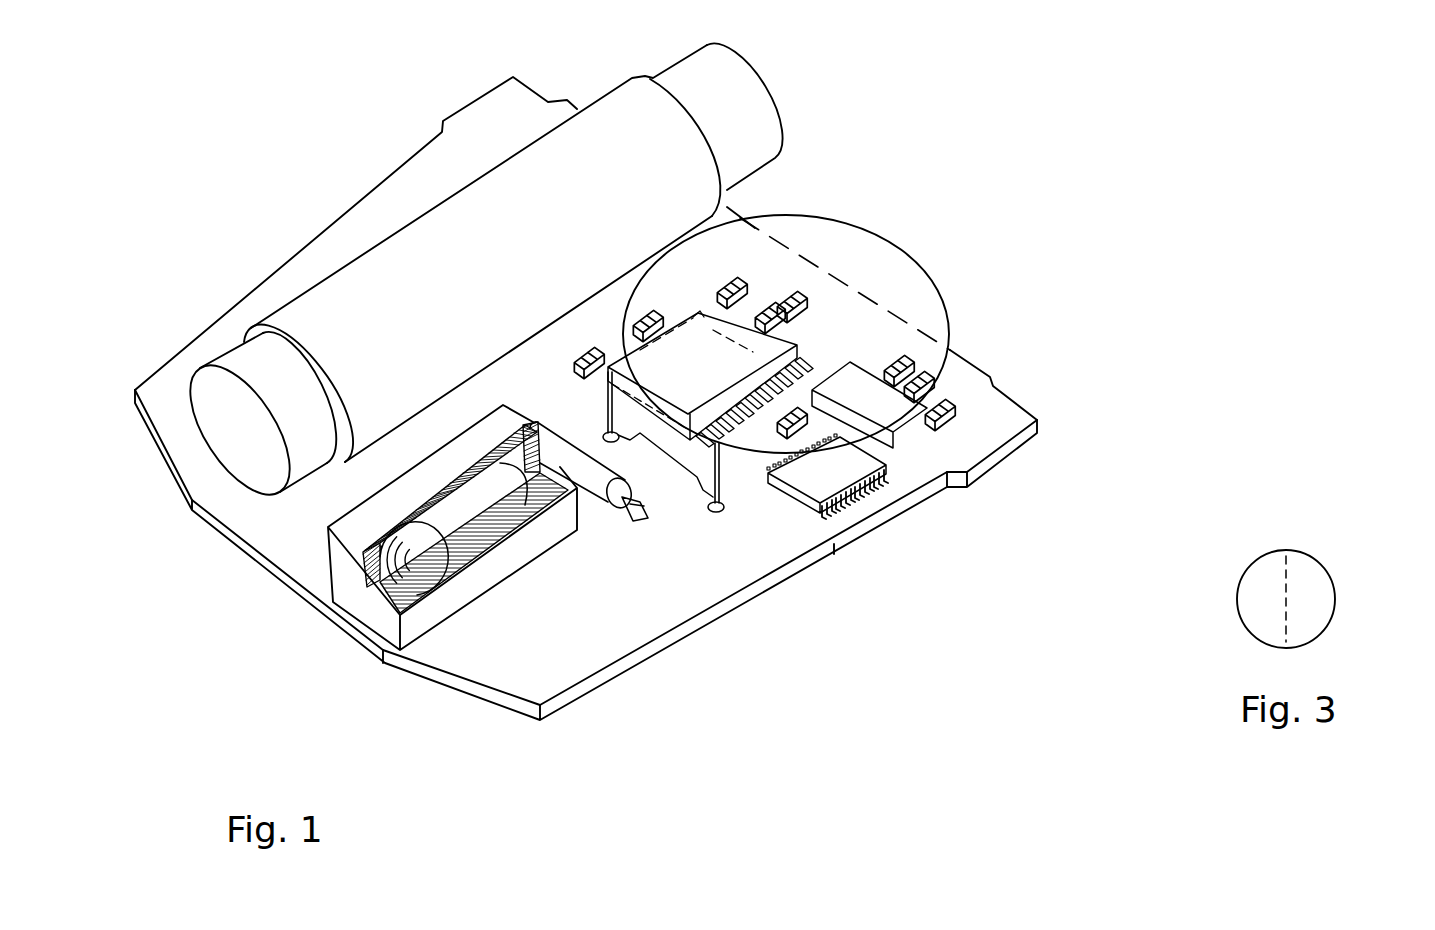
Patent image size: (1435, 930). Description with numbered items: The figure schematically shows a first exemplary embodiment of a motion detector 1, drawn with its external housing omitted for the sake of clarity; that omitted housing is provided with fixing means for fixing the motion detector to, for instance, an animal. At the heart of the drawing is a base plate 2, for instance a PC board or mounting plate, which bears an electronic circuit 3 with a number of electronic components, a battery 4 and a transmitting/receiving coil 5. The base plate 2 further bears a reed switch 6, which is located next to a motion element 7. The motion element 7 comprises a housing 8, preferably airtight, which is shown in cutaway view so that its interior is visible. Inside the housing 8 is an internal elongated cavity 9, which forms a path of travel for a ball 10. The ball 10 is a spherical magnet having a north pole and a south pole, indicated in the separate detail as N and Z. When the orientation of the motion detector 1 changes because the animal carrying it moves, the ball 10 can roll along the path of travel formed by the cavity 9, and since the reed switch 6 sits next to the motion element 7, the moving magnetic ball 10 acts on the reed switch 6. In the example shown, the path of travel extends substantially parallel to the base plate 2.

In FIG. 1, the motion detector 1 is at (617, 416).
In FIG. 1, the base plate 2 is at (998, 422).
In FIG. 1, the electronic circuit 3 is at (790, 342).
In FIG. 1, the battery 4 is at (918, 310).
In FIG. 1, the transmitting/receiving coil 5 is at (733, 102).
In FIG. 1, the reed switch 6 is at (597, 481).
In FIG. 1, the motion element 7 is at (320, 563).
In FIG. 1, the housing 8 is at (349, 575).
In FIG. 1, the cavity 9 is at (468, 518).
In FIG. 1, the ball 10 is at (415, 580).
In FIG. 3, the ball 10 is at (1340, 553).